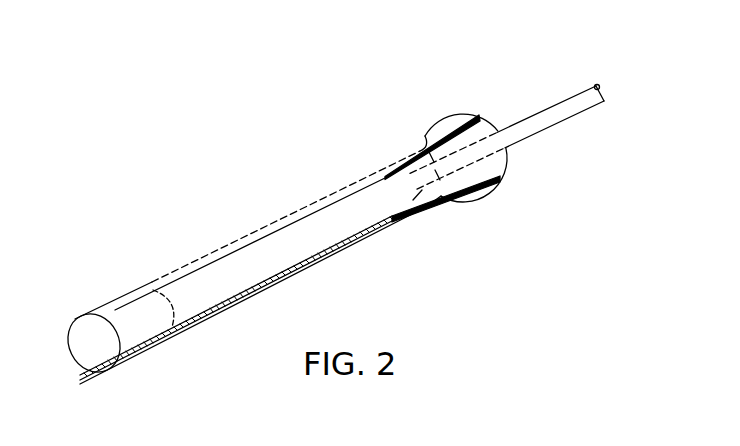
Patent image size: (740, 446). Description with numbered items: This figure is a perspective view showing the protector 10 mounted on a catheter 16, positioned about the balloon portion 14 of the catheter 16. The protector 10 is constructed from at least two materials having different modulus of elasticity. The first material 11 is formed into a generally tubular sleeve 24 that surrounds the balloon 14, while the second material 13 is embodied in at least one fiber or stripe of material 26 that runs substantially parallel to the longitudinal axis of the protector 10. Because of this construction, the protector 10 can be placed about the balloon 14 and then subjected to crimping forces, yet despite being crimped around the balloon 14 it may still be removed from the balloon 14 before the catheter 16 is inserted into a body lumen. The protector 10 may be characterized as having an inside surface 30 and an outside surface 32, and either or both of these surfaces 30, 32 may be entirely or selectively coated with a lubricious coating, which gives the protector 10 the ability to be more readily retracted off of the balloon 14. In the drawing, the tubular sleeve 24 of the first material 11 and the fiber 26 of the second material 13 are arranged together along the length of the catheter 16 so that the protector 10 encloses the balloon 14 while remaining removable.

The protector 10 is at (249, 327).
The first material 11 is at (131, 291).
The second material 13 is at (170, 332).
The balloon portion 14 is at (240, 238).
The catheter 16 is at (507, 107).
The tubular sleeve 24 is at (369, 175).
The fiber 26 is at (282, 229).
The inside surface 30 is at (490, 158).
The outside surface 32 is at (434, 204).